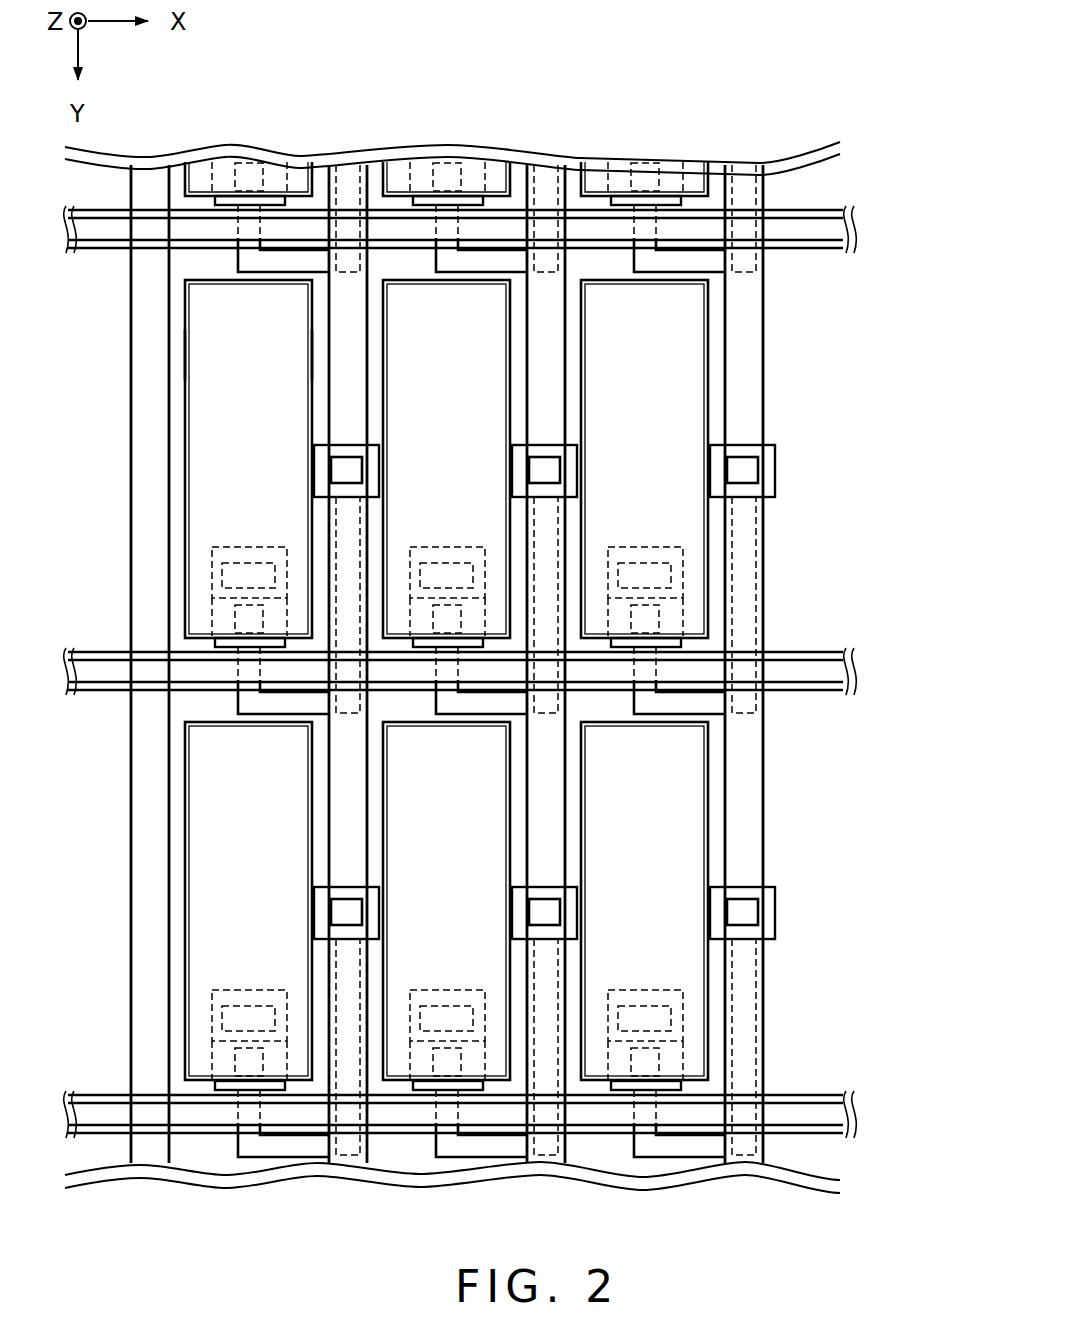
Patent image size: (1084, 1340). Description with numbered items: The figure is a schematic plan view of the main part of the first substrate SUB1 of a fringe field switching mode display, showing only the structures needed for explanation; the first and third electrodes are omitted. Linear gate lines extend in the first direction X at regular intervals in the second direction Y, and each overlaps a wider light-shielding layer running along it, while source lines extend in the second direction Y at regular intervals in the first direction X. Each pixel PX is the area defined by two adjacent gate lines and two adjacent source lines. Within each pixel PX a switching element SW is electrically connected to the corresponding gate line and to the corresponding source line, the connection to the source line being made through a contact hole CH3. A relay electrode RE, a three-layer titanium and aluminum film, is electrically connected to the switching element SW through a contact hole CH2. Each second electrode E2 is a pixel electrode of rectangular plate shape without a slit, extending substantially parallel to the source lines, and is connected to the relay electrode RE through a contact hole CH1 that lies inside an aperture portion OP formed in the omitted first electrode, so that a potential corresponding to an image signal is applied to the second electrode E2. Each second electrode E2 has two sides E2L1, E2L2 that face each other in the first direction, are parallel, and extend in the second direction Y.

The first substrate SUB1 is at (850, 176).
The pixel PX is at (180, 294).
The second electrode E2 is at (210, 316).
The side of second electrode E2L1 is at (188, 352).
The side of second electrode E2L2 is at (312, 356).
The contact hole CH3 is at (340, 472).
The aperture portion OP is at (212, 558).
The contact hole CH1 is at (222, 575).
The contact hole CH2 is at (236, 620).
The relay electrode RE is at (216, 644).
The switching element SW is at (205, 703).